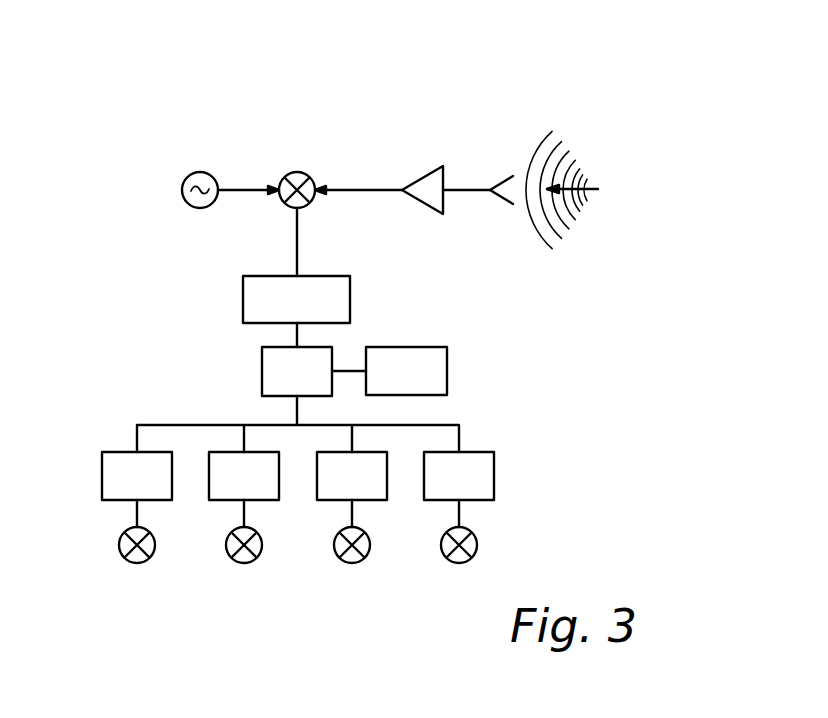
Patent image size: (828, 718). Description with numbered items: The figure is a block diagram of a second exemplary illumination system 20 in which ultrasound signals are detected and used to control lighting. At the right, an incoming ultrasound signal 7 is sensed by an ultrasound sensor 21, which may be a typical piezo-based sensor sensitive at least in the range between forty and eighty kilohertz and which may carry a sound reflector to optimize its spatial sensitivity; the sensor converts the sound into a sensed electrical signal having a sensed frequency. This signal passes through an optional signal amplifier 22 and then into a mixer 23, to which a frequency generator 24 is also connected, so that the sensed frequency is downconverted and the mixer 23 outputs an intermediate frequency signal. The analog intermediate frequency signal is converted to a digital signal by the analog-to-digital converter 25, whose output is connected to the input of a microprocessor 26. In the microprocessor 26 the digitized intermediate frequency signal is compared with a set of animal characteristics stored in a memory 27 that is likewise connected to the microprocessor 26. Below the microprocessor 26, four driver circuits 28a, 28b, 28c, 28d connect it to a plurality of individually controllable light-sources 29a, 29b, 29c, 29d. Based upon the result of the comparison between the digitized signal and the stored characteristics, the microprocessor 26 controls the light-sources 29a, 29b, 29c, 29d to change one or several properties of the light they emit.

The illumination system 20 is at (632, 78).
The ultrasound signal 7 is at (562, 183).
The ultrasound sensor 21 is at (500, 176).
The signal amplifier 22 is at (420, 177).
The mixer 23 is at (298, 172).
The frequency generator 24 is at (202, 172).
The analog-to-digital converter 25 is at (350, 292).
The microprocessor 26 is at (262, 377).
The memory 27 is at (447, 368).
The driver circuit 28a is at (115, 500).
The driver circuit 28b is at (222, 500).
The driver circuit 28c is at (330, 500).
The driver circuit 28d is at (437, 500).
The light-source 29a is at (137, 563).
The light-source 29b is at (244, 563).
The light-source 29c is at (352, 563).
The light-source 29d is at (459, 563).